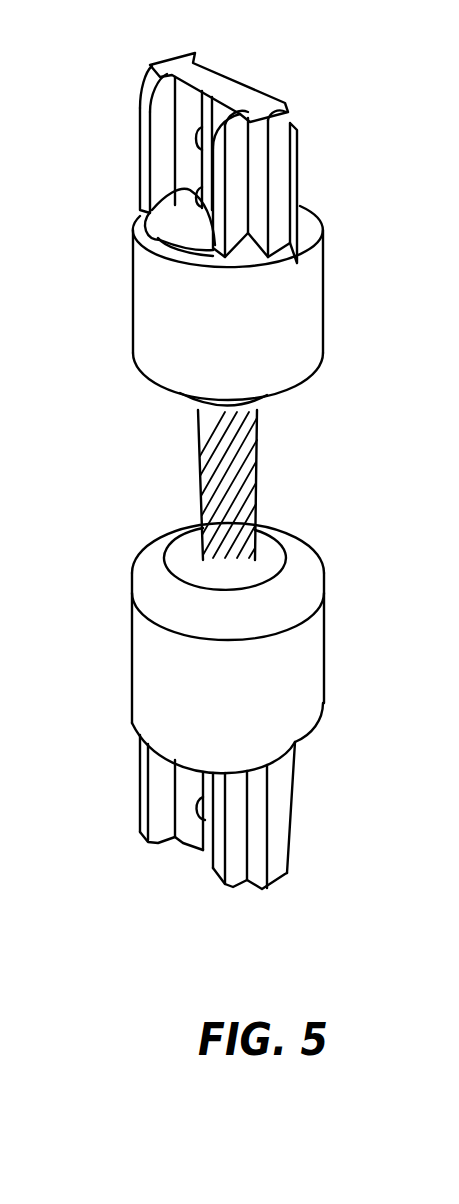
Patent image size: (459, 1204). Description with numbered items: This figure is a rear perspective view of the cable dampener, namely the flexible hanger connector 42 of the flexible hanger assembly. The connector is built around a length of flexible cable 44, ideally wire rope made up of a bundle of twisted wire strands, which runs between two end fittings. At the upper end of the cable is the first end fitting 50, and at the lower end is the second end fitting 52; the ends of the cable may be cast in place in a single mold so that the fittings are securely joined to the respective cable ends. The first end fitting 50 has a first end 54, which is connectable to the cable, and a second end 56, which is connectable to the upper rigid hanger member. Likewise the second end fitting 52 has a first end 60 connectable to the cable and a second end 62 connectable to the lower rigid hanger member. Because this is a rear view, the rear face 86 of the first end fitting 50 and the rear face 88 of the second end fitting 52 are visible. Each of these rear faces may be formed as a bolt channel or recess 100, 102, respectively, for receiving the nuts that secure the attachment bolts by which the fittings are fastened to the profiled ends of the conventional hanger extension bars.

The flexible hanger connector 42 is at (341, 412).
The flexible cable 44 is at (198, 478).
The first end fitting 50 is at (148, 302).
The second end fitting 52 is at (145, 685).
The first end of first end fitting 54 is at (307, 303).
The second end of first end fitting 56 is at (293, 143).
The first end of second end fitting 60 is at (310, 653).
The second end of second end fitting 62 is at (290, 840).
The rear face of first end fitting 86 is at (190, 147).
The rear face of second end fitting 88 is at (182, 807).
The bolt channel or recess 100 is at (191, 100).
The bolt channel or recess 102 is at (187, 847).